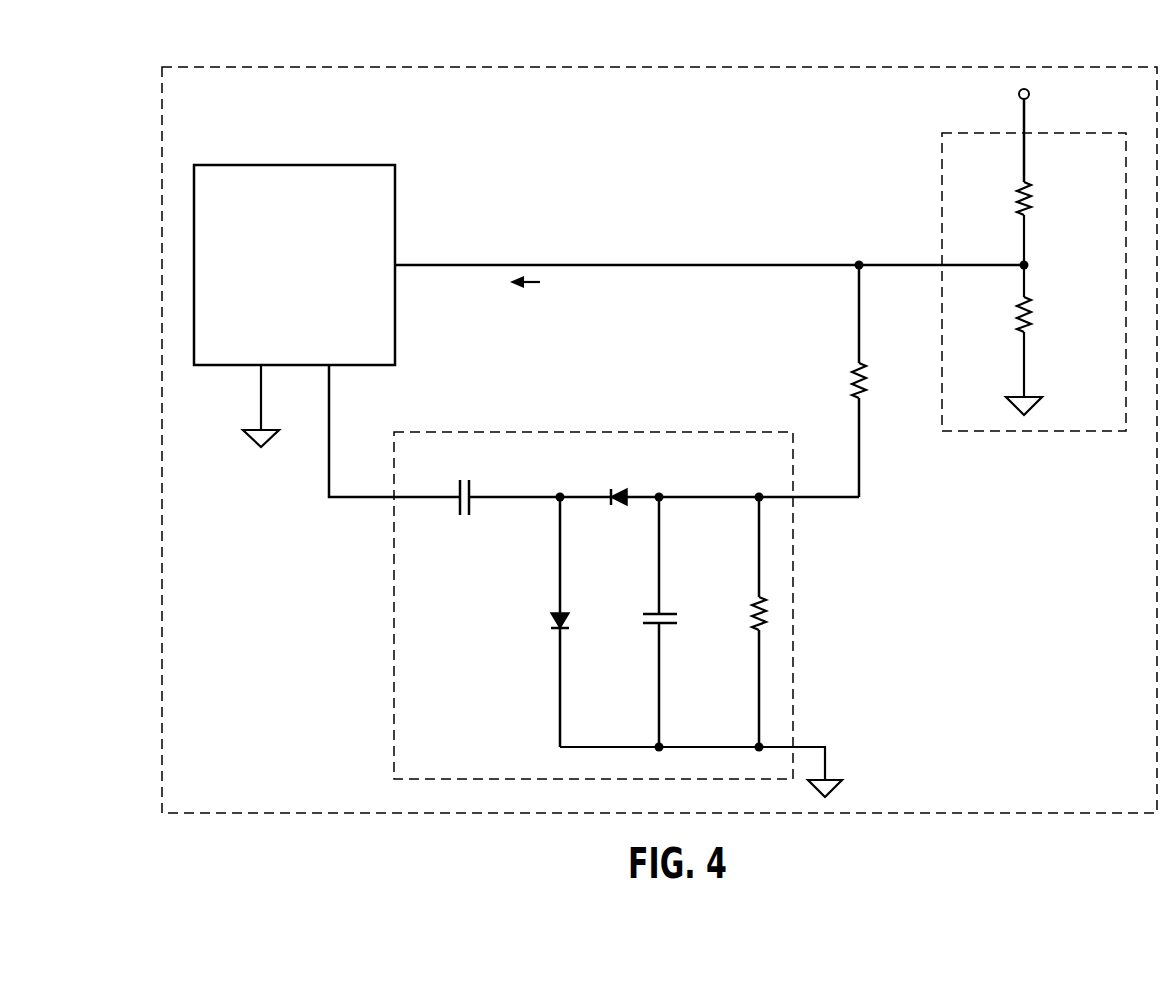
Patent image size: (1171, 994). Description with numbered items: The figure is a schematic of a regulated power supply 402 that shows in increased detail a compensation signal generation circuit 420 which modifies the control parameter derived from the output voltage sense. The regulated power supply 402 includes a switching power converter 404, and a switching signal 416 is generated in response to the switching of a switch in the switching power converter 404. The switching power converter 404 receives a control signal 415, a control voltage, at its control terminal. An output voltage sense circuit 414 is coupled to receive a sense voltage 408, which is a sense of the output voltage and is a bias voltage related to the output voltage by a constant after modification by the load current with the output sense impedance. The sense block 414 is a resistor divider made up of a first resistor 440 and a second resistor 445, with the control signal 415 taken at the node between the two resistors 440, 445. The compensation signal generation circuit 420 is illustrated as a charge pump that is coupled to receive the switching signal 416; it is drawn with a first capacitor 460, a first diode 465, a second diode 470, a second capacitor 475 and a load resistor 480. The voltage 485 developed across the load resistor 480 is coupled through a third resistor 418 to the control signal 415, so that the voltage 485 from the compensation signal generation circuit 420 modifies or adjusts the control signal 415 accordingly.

The regulated power supply 402 is at (361, 62).
The switching power converter 404 is at (295, 160).
The output sense voltage VSENSE 408 is at (1037, 91).
The VOUT sense circuit 414 is at (940, 220).
The control signal 415 is at (717, 240).
The switching signal VSW 416 is at (317, 467).
The resistor R3 418 is at (838, 377).
The compensation signal generation circuit 420 is at (382, 602).
The resistor R1 440 is at (1040, 200).
The resistor R2 445 is at (1040, 322).
The capacitor CT 460 is at (484, 508).
The diode D1 465 is at (543, 644).
The diode D2 470 is at (633, 492).
The capacitor CA 475 is at (652, 644).
The resistor RA 480 is at (752, 640).
The voltage VA 485 is at (842, 601).